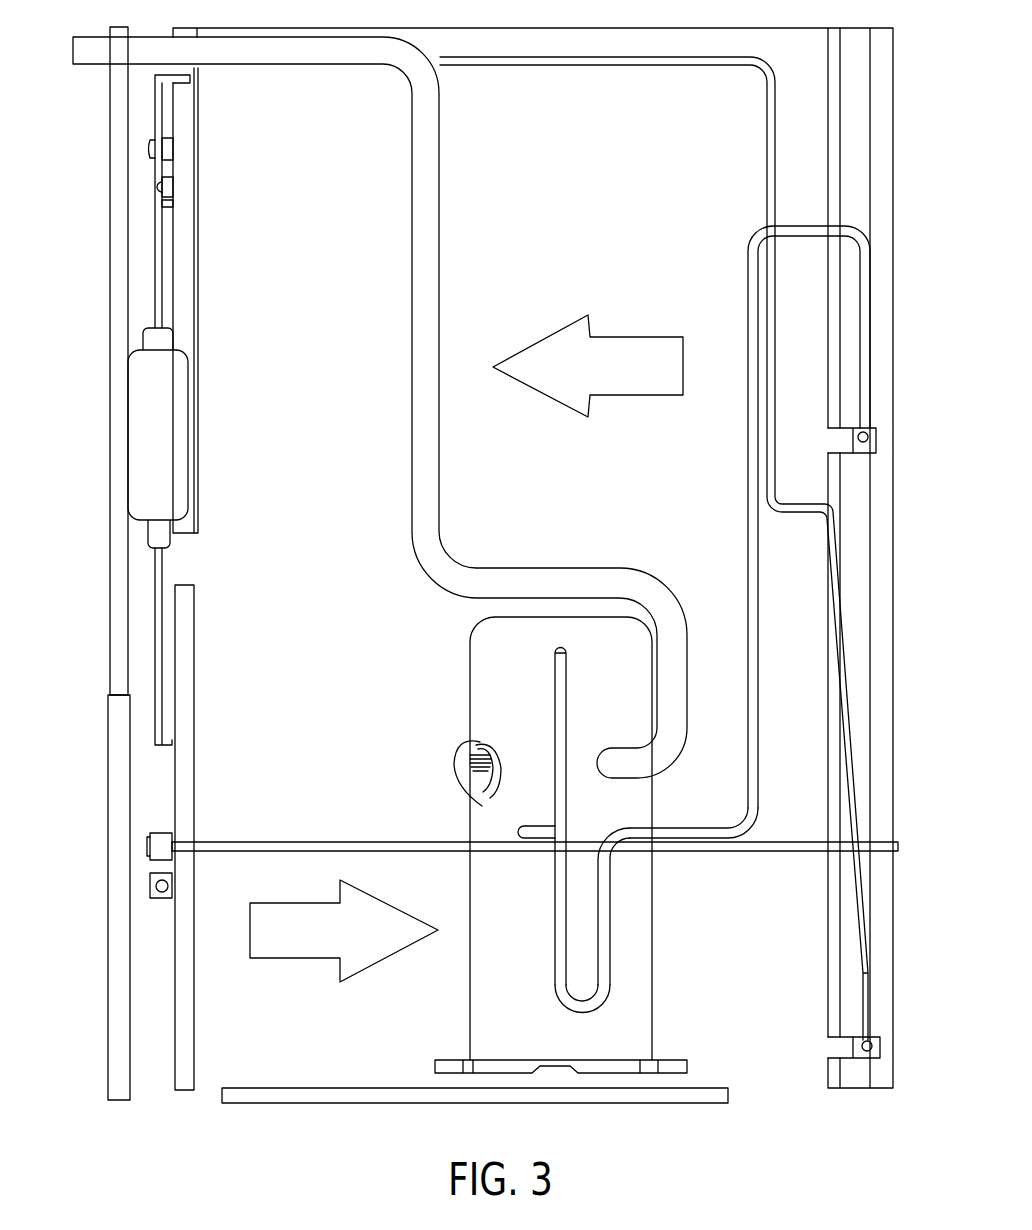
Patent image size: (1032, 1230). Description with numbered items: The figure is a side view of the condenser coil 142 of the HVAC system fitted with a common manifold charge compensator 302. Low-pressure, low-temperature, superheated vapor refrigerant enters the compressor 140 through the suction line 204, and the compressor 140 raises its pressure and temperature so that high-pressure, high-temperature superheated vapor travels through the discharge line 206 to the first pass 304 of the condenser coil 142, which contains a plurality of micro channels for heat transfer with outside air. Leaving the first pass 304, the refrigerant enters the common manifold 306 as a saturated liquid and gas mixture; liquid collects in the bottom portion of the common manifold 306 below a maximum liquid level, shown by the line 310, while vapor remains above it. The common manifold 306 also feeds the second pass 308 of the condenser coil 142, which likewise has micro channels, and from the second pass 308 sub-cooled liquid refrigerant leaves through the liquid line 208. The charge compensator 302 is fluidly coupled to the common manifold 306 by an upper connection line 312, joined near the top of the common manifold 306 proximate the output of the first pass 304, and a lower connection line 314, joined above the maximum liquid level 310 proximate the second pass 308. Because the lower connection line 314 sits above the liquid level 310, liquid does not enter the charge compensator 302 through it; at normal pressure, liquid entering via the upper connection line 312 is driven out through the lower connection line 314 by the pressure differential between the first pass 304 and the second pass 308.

The compressor 140 is at (470, 718).
The condenser coil 142 is at (838, 925).
The suction line 204 is at (450, 552).
The discharge line 206 is at (765, 695).
The liquid line 208 is at (805, 500).
The common manifold charge compensator 302 is at (190, 447).
The first pass 304 is at (630, 335).
The common manifold 306 is at (199, 256).
The second pass 308 is at (403, 906).
The maximum liquid level line 310 is at (292, 840).
The upper connection line 312 is at (155, 273).
The lower connection line 314 is at (165, 577).